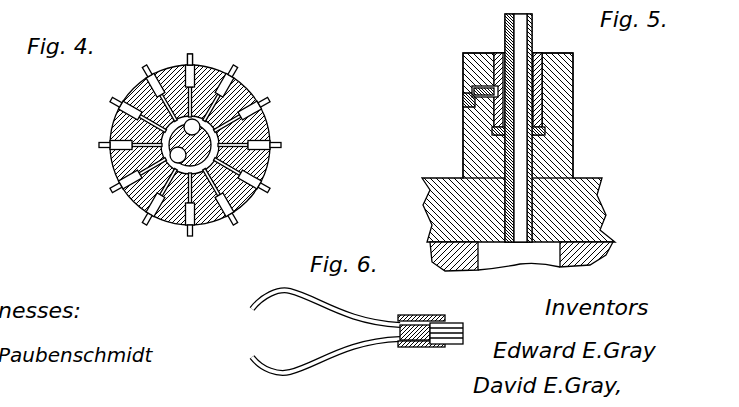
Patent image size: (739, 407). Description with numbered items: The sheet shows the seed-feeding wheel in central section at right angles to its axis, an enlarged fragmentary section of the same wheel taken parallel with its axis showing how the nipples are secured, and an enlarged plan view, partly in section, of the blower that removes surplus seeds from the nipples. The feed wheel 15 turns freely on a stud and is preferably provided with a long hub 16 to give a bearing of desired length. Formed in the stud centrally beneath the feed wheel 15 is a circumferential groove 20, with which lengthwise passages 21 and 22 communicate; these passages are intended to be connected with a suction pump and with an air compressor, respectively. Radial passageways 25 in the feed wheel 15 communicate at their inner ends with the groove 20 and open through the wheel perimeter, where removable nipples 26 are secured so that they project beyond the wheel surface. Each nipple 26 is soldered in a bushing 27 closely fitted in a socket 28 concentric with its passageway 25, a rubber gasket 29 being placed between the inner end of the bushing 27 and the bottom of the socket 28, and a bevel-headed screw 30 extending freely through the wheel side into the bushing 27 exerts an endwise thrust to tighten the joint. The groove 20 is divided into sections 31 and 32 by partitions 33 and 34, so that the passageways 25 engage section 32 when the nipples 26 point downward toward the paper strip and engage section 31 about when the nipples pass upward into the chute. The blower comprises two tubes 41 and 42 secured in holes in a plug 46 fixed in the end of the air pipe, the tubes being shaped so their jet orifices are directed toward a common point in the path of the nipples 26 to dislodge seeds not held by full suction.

In FIG. 4, the feed wheel 15 is at (260, 123).
In FIG. 5, the feed wheel 15 is at (463, 58).
In FIG. 5, the hub 16 is at (603, 185).
In FIG. 4, the circumferential groove 20 is at (230, 160).
In FIG. 5, the circumferential groove 20 is at (522, 257).
In FIG. 4, the passage 21 is at (177, 110).
In FIG. 4, the passage 22 is at (177, 153).
In FIG. 4, the radial passageway 25 is at (228, 182).
In FIG. 5, the radial passageway 25 is at (520, 158).
In FIG. 4, the nipple 26 is at (196, 63).
In FIG. 5, the nipple 26 is at (533, 30).
In FIG. 5, the bushing 27 is at (543, 100).
In FIG. 5, the socket 28 is at (540, 75).
In FIG. 5, the gasket 29 is at (510, 132).
In FIG. 5, the screw 30 is at (472, 87).
In FIG. 4, the groove section 31 is at (213, 120).
In FIG. 4, the groove section 32 is at (160, 170).
In FIG. 4, the partition 33 is at (183, 177).
In FIG. 4, the partition 34 is at (122, 125).
In FIG. 6, the tube 41 is at (293, 289).
In FIG. 6, the tube 42 is at (326, 373).
In FIG. 6, the plug 46 is at (414, 347).